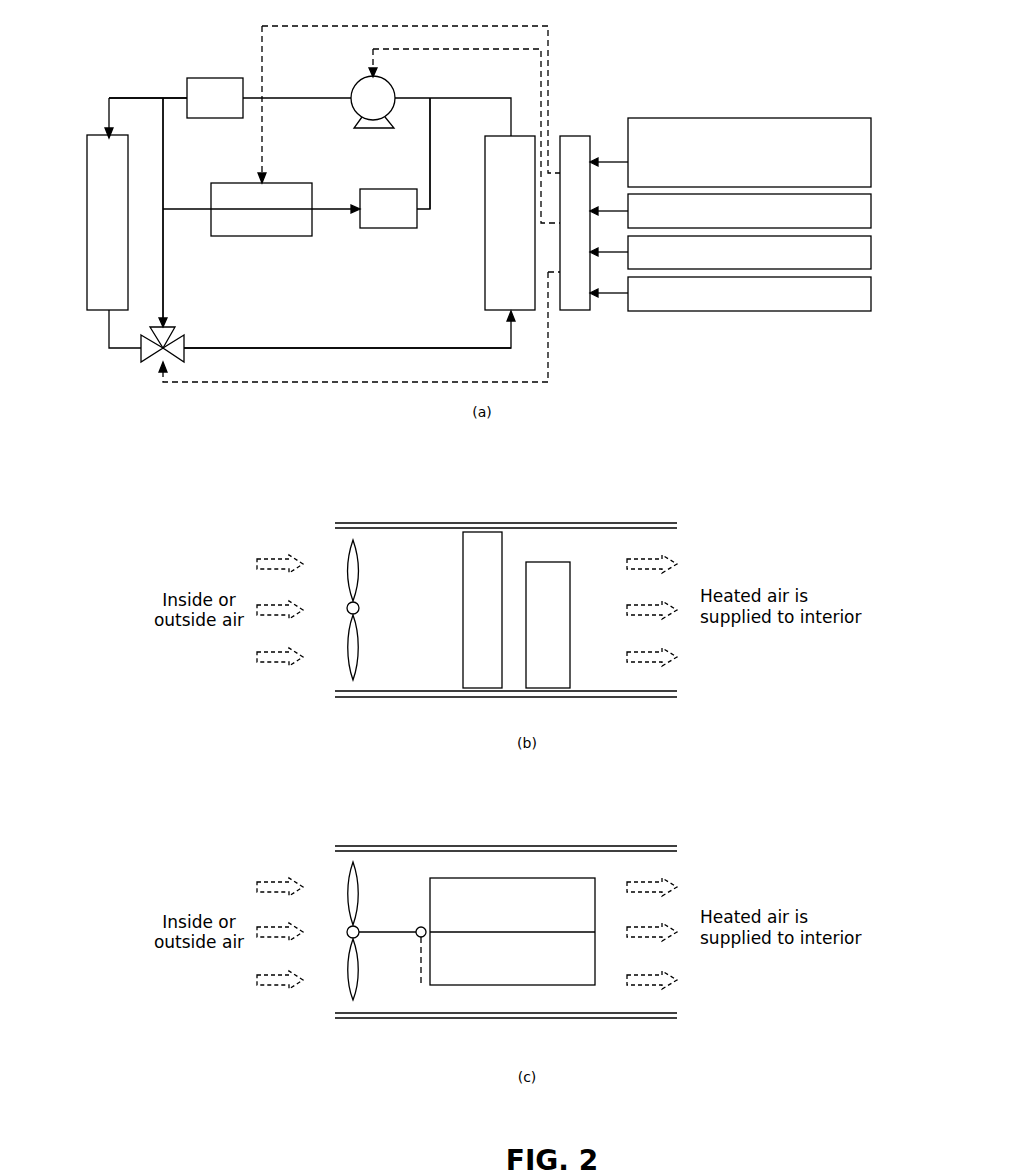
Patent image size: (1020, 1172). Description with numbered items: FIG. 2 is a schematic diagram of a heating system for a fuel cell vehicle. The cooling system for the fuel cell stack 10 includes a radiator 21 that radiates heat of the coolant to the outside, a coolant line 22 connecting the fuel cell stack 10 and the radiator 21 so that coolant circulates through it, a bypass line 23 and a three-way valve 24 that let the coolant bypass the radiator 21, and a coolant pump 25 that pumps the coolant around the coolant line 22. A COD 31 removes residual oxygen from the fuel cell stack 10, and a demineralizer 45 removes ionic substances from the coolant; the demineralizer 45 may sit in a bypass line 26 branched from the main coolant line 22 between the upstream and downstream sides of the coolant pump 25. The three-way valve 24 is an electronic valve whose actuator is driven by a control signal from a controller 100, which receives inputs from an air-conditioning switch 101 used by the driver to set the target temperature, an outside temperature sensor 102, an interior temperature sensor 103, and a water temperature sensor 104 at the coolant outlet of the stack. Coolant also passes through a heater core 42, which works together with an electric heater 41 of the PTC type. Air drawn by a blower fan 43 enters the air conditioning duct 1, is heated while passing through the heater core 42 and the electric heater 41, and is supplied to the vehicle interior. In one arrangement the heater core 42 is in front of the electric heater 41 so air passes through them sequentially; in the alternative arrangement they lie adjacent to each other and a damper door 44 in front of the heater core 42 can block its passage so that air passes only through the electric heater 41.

The air conditioning duct 1 is at (650, 527).
The fuel cell stack 10 is at (521, 136).
The radiator 21 is at (100, 135).
The coolant line 22 is at (164, 97).
The bypass line 23 is at (164, 145).
The three-way valve 24 is at (146, 358).
The coolant pump 25 is at (351, 88).
The bypass line 26 is at (431, 118).
The COD 31 is at (209, 78).
The electric heater (PTC heater) 41 is at (300, 183).
The heater core 42 is at (268, 236).
The blower fan 43 is at (357, 550).
The damper door 44 is at (421, 967).
The demineralizer 45 is at (388, 228).
The controller 100 is at (573, 136).
The air-conditioning switch 101 is at (873, 150).
The outside temperature sensor 102 is at (873, 208).
The interior temperature sensor 103 is at (873, 250).
The water temperature sensor 104 is at (873, 291).